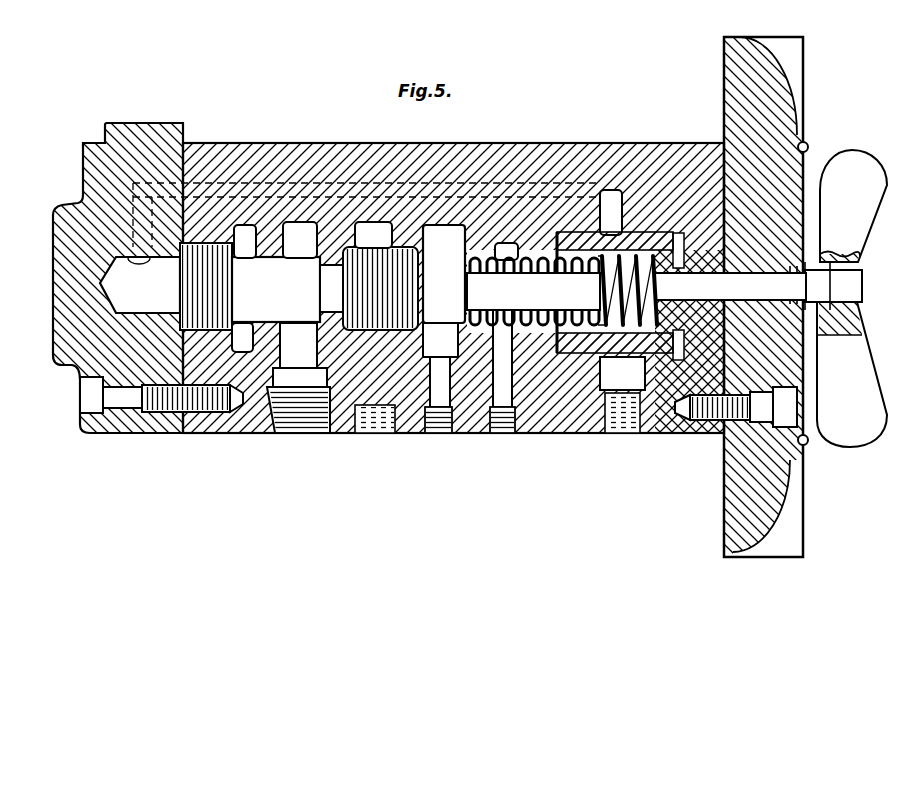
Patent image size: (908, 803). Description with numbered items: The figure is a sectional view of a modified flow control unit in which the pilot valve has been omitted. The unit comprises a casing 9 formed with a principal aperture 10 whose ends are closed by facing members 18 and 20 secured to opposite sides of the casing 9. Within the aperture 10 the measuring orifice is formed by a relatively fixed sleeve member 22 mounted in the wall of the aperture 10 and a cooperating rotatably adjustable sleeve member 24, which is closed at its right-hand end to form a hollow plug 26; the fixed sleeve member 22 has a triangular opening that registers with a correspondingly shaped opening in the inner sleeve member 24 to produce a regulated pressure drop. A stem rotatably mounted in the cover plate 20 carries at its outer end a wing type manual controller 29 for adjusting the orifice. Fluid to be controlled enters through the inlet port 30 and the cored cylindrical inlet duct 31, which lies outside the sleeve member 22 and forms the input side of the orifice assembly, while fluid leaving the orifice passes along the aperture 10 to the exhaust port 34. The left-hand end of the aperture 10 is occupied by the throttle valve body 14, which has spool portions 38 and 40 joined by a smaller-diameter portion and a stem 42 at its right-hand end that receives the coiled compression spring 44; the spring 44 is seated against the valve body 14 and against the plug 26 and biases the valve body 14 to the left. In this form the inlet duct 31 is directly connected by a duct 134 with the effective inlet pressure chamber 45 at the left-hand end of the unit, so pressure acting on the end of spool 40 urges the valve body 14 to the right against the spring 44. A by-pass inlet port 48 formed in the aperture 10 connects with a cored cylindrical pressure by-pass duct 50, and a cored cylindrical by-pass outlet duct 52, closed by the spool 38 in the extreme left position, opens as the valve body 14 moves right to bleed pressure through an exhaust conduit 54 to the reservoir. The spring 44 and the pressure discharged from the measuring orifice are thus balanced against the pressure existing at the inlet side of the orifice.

The casing 9 is at (250, 143).
The aperture 10 is at (347, 335).
The throttle valve body 14 is at (288, 273).
The facing member 18 is at (58, 328).
The facing member 20 is at (790, 512).
The fixed sleeve member 22 is at (590, 353).
The rotatably adjustable sleeve member 24 is at (595, 353).
The hollow plug 26 is at (670, 233).
The wing type manual controller 29 is at (872, 423).
The inlet port 30 is at (642, 425).
The inlet duct 31 is at (625, 380).
The exhaust port 34 is at (444, 329).
The spool portion 38 is at (360, 292).
The spool portion 40 is at (187, 275).
The stem 42 is at (636, 290).
The coiled compression spring 44 is at (505, 272).
The effective inlet pressure chamber 45 is at (125, 277).
The by-pass inlet port 48 is at (282, 415).
The pressure by-pass duct 50 is at (300, 240).
The by-pass outlet duct 52 is at (372, 222).
The exhaust conduit 54 is at (382, 395).
The duct 134 is at (328, 183).